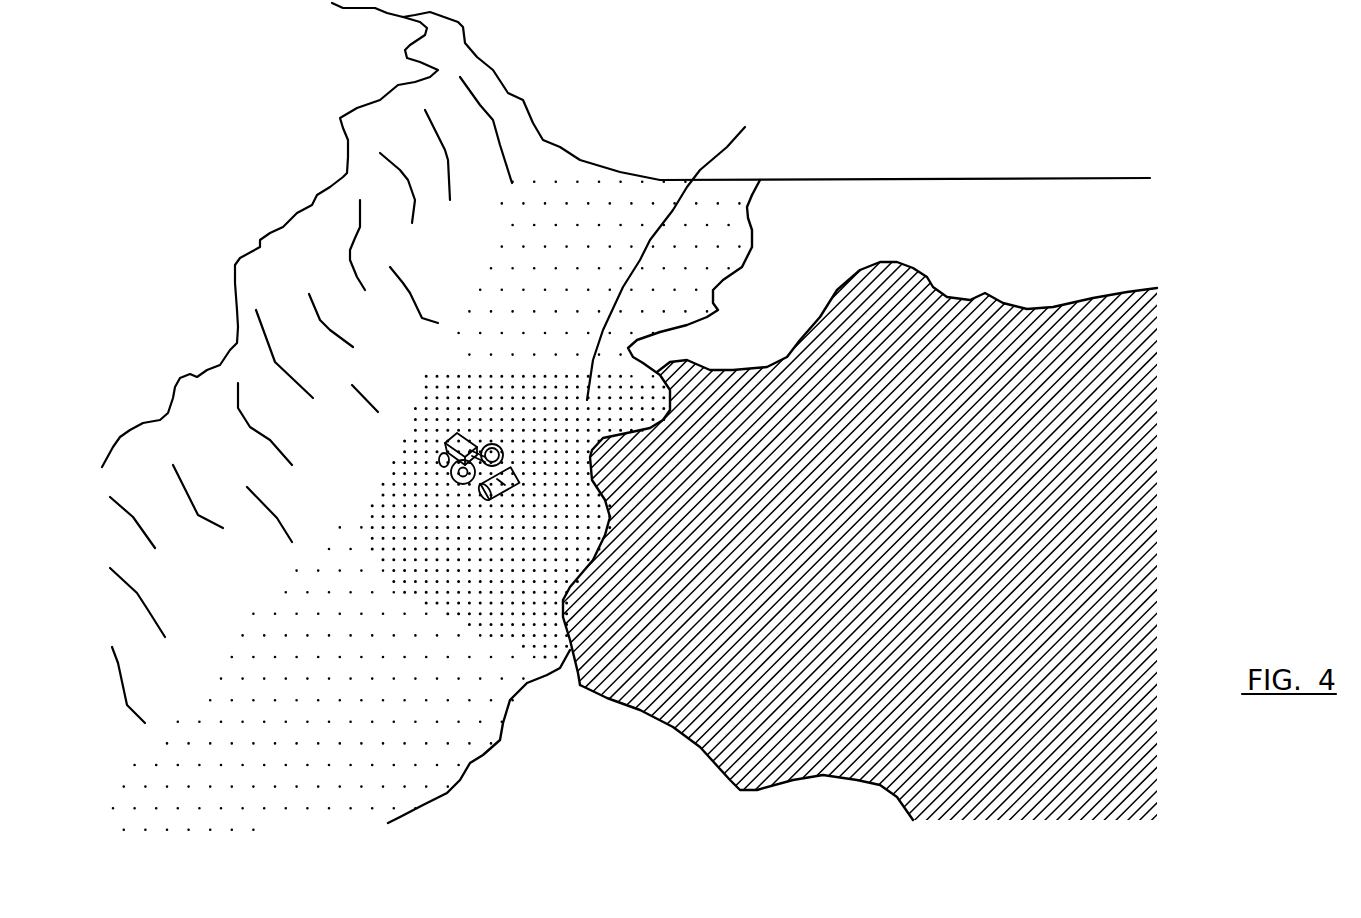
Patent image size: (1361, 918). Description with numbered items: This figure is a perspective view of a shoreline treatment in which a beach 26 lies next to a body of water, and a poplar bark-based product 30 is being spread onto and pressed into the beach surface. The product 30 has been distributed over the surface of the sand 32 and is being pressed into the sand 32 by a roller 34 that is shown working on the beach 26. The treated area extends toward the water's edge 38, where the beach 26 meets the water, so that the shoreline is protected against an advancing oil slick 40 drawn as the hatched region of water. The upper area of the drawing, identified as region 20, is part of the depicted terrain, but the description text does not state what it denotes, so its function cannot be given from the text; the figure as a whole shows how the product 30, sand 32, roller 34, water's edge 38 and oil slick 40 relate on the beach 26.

The field area 20 is at (866, 218).
The beach 26 is at (622, 195).
The poplar bark-based product 30 is at (681, 251).
The sand 32 is at (572, 178).
The roller 34 is at (508, 485).
The water's edge 38 is at (752, 226).
The oil slick 40 is at (1153, 377).